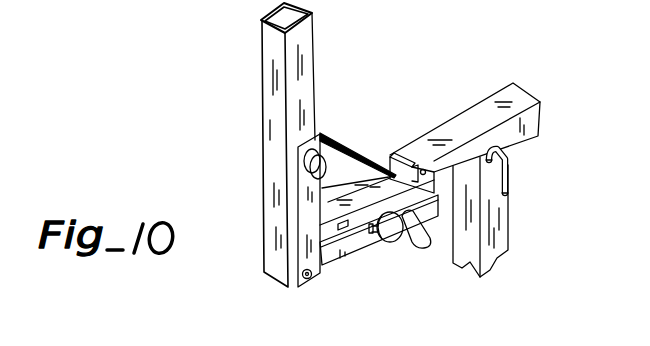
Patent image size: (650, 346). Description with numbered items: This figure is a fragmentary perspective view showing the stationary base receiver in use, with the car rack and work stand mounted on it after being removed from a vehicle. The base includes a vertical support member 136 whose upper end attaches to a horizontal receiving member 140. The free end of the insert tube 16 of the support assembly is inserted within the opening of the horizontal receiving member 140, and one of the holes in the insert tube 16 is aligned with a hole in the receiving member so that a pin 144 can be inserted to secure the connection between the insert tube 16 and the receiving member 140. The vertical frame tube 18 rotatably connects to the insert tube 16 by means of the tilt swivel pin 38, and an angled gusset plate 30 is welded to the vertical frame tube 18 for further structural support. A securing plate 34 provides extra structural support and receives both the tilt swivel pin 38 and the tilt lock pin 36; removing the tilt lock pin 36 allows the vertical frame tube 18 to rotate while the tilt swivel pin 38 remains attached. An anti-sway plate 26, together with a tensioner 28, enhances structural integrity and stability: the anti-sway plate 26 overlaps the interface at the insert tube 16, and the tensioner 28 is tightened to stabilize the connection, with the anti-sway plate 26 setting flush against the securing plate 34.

The insert tube 16 is at (358, 190).
The vertical frame tube 18 is at (307, 53).
The anti-sway plate 26 is at (348, 246).
The tensioner 28 is at (394, 242).
The angled gusset plate 30 is at (358, 170).
The securing plate 34 is at (308, 211).
The tilt lock pin 36 is at (306, 162).
The tilt swivel pin 38 is at (302, 273).
The vertical support member 136 is at (497, 227).
The horizontal receiving member 140 is at (488, 112).
The pin 144 is at (510, 174).